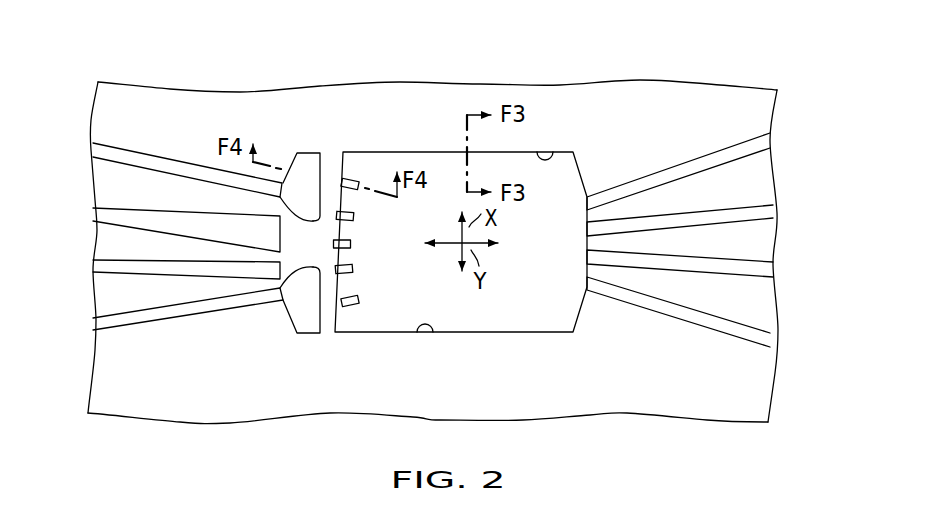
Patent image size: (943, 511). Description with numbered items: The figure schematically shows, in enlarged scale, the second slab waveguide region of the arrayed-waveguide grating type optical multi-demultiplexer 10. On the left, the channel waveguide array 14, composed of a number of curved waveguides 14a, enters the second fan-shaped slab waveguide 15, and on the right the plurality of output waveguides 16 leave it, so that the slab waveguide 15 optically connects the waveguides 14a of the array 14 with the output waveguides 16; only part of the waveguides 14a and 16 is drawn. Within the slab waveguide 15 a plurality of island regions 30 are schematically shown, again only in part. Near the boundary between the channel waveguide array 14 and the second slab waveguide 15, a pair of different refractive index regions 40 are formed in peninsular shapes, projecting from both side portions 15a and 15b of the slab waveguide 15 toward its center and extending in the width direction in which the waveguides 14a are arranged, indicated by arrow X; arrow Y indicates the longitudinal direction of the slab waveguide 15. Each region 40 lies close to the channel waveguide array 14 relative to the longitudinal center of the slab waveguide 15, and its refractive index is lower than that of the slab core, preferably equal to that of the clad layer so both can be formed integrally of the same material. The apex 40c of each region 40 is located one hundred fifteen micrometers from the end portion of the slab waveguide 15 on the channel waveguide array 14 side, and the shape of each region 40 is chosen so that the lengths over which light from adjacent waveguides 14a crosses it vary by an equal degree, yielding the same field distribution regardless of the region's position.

The optical multi-demultiplexer 10 is at (645, 64).
The channel waveguide array 14 is at (157, 189).
The curved waveguides 14a is at (93, 149).
The second fan-shaped slab waveguide 15 is at (548, 328).
The side portion 15a is at (546, 148).
The side portion 15b is at (426, 336).
The output waveguides 16 is at (585, 204).
The island regions 30 is at (358, 187).
The different refractive index regions 40 is at (312, 181).
The apex 40c is at (280, 205).